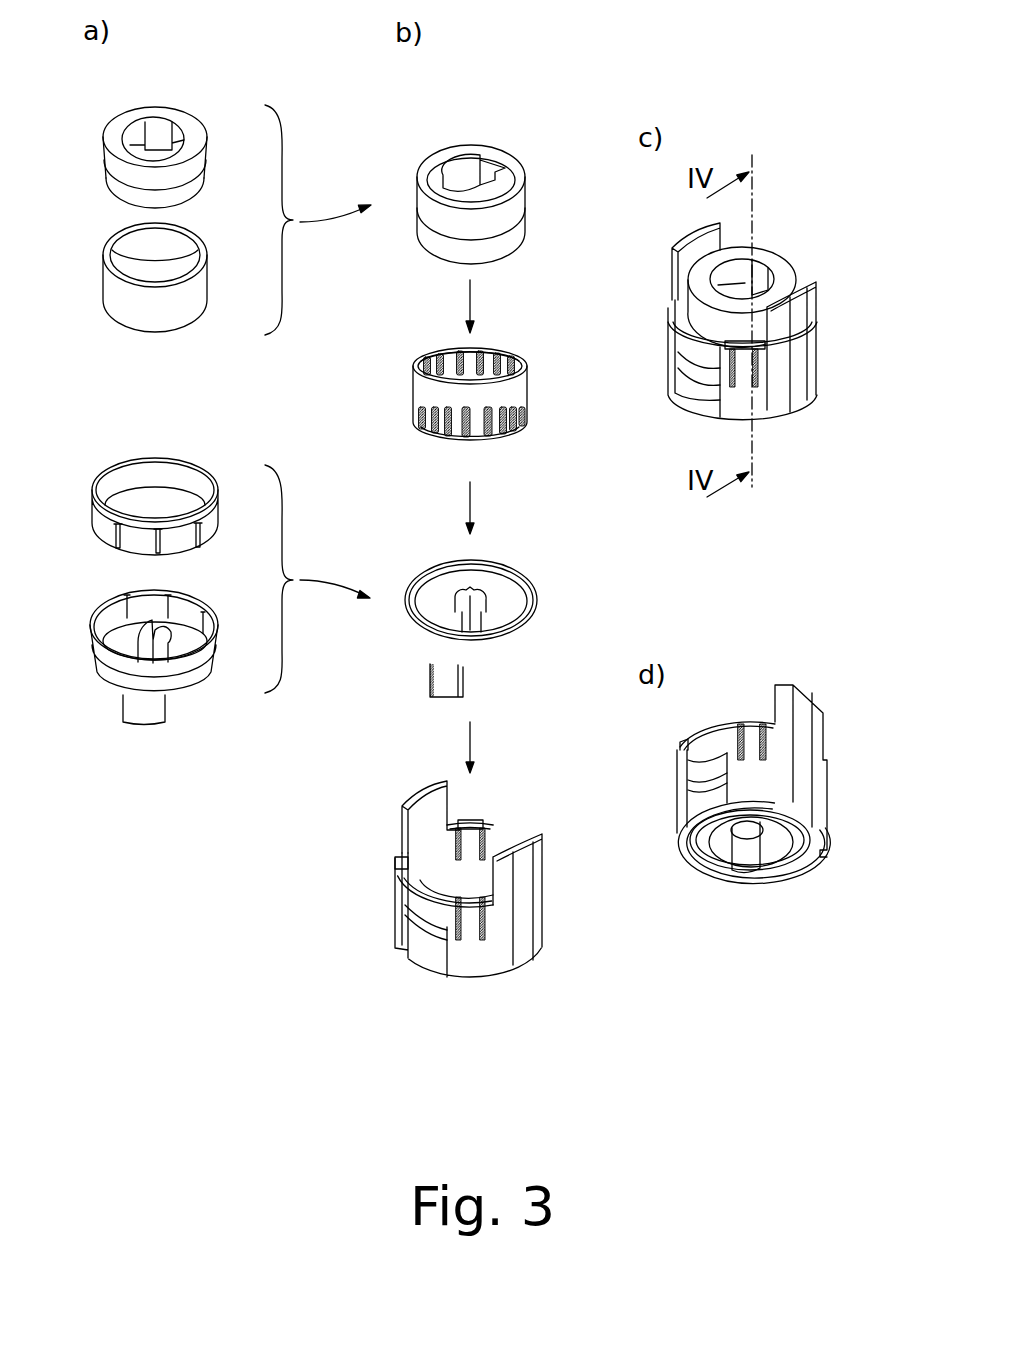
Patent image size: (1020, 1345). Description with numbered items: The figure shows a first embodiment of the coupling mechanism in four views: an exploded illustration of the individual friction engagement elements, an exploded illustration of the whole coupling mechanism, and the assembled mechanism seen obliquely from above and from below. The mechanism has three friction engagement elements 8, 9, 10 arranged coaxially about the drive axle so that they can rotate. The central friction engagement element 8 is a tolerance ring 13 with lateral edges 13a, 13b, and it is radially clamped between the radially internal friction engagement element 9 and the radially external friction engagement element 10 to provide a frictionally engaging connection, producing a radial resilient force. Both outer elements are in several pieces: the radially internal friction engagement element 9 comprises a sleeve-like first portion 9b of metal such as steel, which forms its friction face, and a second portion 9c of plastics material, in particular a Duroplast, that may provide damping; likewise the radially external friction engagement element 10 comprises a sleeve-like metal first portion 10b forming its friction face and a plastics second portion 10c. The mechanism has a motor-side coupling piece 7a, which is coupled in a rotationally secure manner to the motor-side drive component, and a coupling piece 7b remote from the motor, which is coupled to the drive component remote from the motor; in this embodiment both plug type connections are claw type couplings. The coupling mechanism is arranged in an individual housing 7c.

The motor-side coupling piece 7a is at (158, 112).
The coupling piece remote from the motor 7b is at (172, 728).
The housing 7c is at (490, 962).
The central friction engagement element 8 is at (403, 382).
The radially internal friction engagement element 9 is at (102, 283).
The first portion of the radially internal friction engagement element 9b is at (195, 295).
The second portion of the radially internal friction engagement element 9c is at (202, 155).
The radially external friction engagement element 10 is at (112, 598).
The first portion of the radially external friction engagement element 10b is at (178, 457).
The second portion of the radially external friction engagement element 10c is at (187, 690).
The tolerance ring 13 is at (518, 391).
The lateral edge of the tolerance ring 13a is at (505, 350).
The lateral edge of the tolerance ring 13b is at (498, 437).